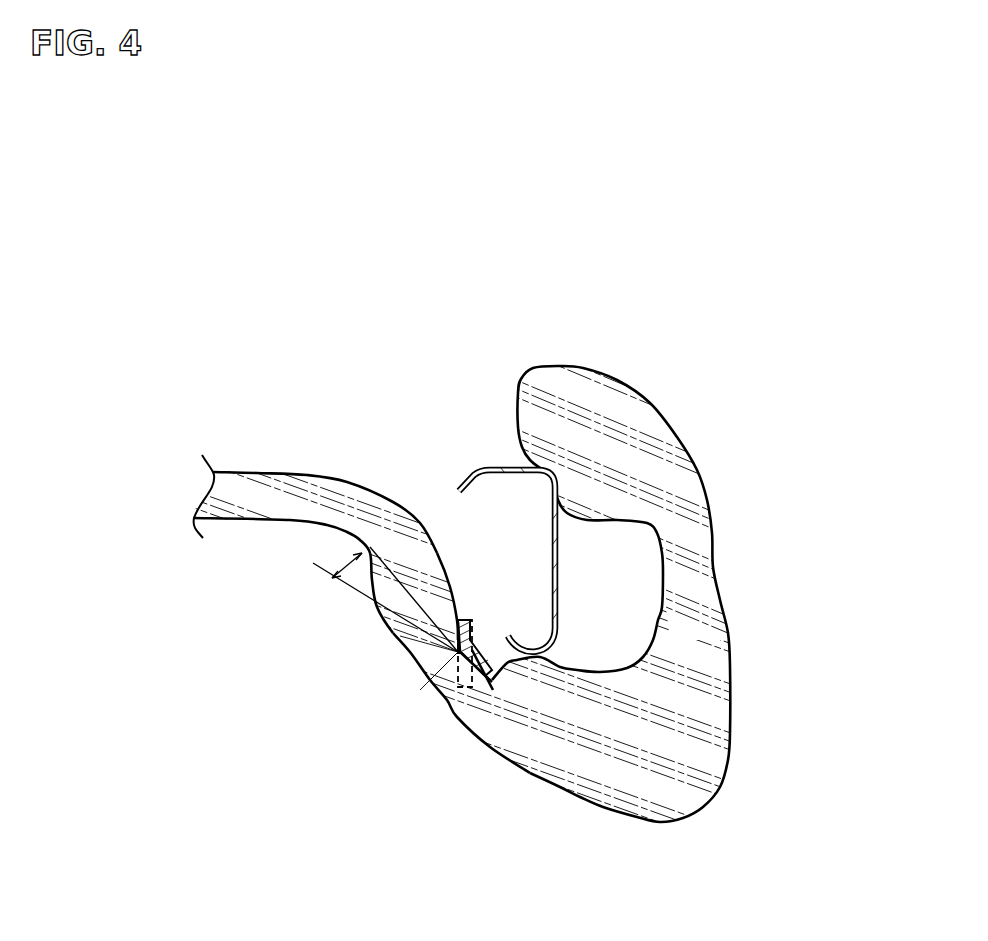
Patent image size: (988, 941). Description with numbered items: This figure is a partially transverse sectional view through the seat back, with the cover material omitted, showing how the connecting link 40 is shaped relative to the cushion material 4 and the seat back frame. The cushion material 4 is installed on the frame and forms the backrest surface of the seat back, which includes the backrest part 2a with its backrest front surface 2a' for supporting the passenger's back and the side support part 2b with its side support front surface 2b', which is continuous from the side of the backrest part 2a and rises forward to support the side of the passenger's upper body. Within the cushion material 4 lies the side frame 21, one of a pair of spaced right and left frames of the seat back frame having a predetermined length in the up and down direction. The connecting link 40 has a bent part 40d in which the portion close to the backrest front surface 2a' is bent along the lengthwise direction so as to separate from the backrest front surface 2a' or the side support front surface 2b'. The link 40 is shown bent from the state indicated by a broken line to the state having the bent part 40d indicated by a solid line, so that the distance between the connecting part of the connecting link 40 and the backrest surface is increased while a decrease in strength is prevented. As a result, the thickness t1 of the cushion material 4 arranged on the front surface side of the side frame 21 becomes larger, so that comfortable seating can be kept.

The cushion material 4 is at (717, 670).
The backrest part 2a is at (315, 543).
The backrest front surface 2a' is at (364, 582).
The side support part 2b is at (480, 757).
The side support front surface 2b' is at (489, 716).
The side frame 21 is at (487, 467).
The connecting link 40 is at (455, 653).
The bent part 40d is at (455, 660).
The thickness of the cushion material t1 is at (333, 579).